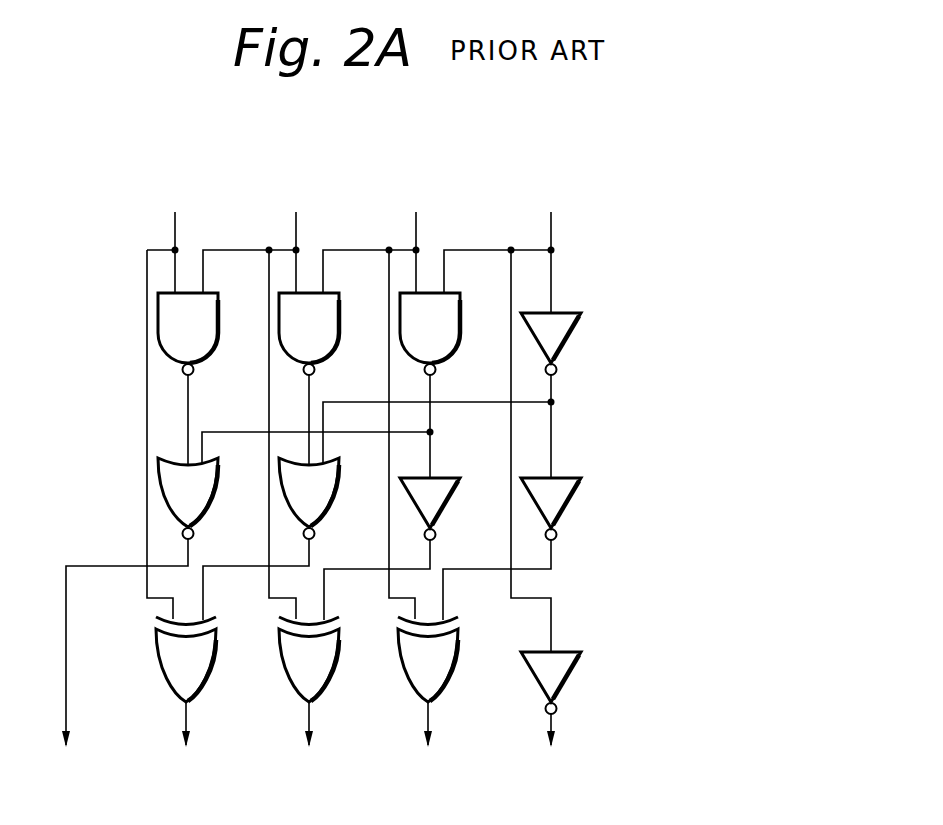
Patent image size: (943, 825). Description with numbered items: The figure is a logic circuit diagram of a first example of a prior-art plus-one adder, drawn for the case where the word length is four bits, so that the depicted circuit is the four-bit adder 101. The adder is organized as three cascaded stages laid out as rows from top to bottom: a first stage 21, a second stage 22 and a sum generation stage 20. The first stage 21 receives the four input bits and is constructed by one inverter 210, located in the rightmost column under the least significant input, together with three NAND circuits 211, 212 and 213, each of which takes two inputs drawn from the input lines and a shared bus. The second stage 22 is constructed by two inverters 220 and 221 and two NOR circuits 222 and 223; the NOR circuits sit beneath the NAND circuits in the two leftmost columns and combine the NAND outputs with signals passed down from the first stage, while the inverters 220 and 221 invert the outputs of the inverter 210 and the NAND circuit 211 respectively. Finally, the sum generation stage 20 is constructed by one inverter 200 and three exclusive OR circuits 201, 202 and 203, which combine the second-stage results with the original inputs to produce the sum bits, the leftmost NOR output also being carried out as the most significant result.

The 4-bit adder 101 is at (735, 146).
The first stage 21 is at (696, 331).
The second stage 22 is at (696, 496).
The sum generation stage 20 is at (696, 668).
The NAND circuit 213 is at (218, 346).
The NAND circuit 212 is at (339, 346).
The NAND circuit 211 is at (460, 346).
The inverter 210 is at (571, 338).
The NOR circuit 223 is at (216, 500).
The NOR circuit 222 is at (337, 500).
The inverter 221 is at (452, 498).
The inverter 220 is at (571, 503).
The exclusive OR circuit 203 is at (213, 672).
The exclusive OR circuit 202 is at (336, 672).
The exclusive OR circuit 201 is at (455, 672).
The inverter 200 is at (571, 677).